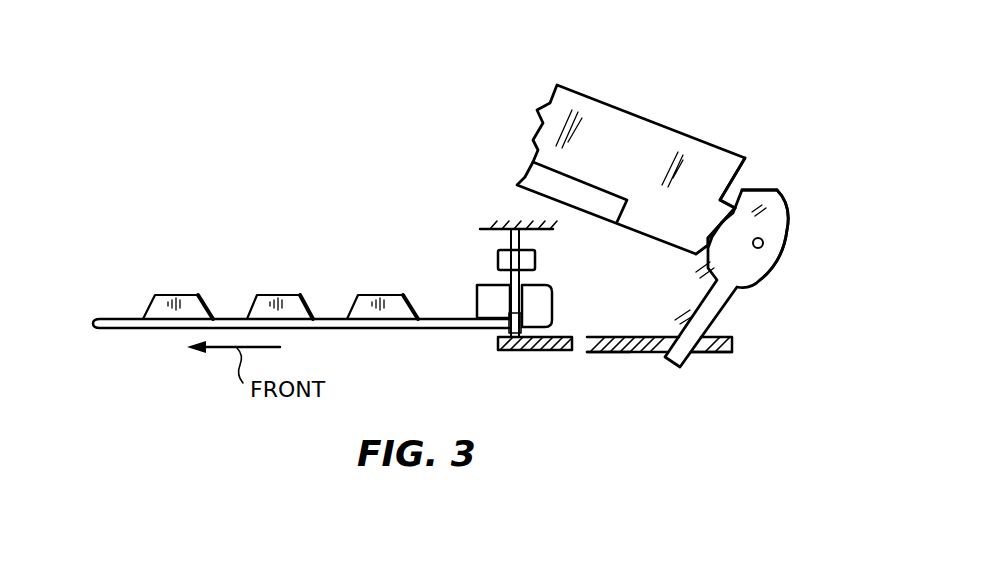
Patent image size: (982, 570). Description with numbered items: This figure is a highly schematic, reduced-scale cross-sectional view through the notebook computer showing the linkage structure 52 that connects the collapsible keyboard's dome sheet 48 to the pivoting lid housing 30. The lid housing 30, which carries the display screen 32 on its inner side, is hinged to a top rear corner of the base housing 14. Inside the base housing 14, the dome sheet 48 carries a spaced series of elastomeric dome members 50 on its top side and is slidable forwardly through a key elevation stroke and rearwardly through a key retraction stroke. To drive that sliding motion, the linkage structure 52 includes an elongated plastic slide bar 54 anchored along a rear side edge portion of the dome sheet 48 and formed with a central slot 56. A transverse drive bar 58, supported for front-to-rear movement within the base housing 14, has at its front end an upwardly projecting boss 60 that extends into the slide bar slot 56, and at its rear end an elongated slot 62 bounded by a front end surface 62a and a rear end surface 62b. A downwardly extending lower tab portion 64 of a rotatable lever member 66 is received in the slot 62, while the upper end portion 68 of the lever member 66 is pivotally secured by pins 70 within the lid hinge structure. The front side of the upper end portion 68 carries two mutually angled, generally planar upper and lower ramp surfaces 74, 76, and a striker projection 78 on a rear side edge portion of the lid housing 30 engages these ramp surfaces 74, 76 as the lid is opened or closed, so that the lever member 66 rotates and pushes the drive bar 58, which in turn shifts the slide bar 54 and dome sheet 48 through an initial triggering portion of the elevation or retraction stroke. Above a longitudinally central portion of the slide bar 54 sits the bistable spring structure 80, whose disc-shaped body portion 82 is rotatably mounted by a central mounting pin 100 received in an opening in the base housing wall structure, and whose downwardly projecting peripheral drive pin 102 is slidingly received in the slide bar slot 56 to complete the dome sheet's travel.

The base housing 14 is at (500, 222).
The lid housing 30 is at (610, 91).
The display screen 32 is at (588, 183).
The dome sheet 48 is at (123, 328).
The dome members 50 is at (170, 295).
The linkage structure 52 is at (587, 367).
The slide bar 54 is at (553, 307).
The central slot 56 is at (552, 292).
The drive bar 58 is at (515, 351).
The boss 60 is at (510, 320).
The slot 62 is at (650, 344).
The front end surface 62a is at (630, 352).
The rear end surface 62b is at (693, 353).
The lower tab portion 64 is at (727, 300).
The lever member 66 is at (795, 195).
The upper end portion 68 is at (777, 227).
The pins 70 is at (765, 243).
The upper ramp surface 74 is at (723, 190).
The lower ramp surface 76 is at (705, 242).
The striker projection 78 is at (757, 190).
The bistable spring structure 80 is at (484, 260).
The body portion 82 is at (535, 258).
The mounting pin 100 is at (507, 242).
The drive pin 102 is at (510, 278).